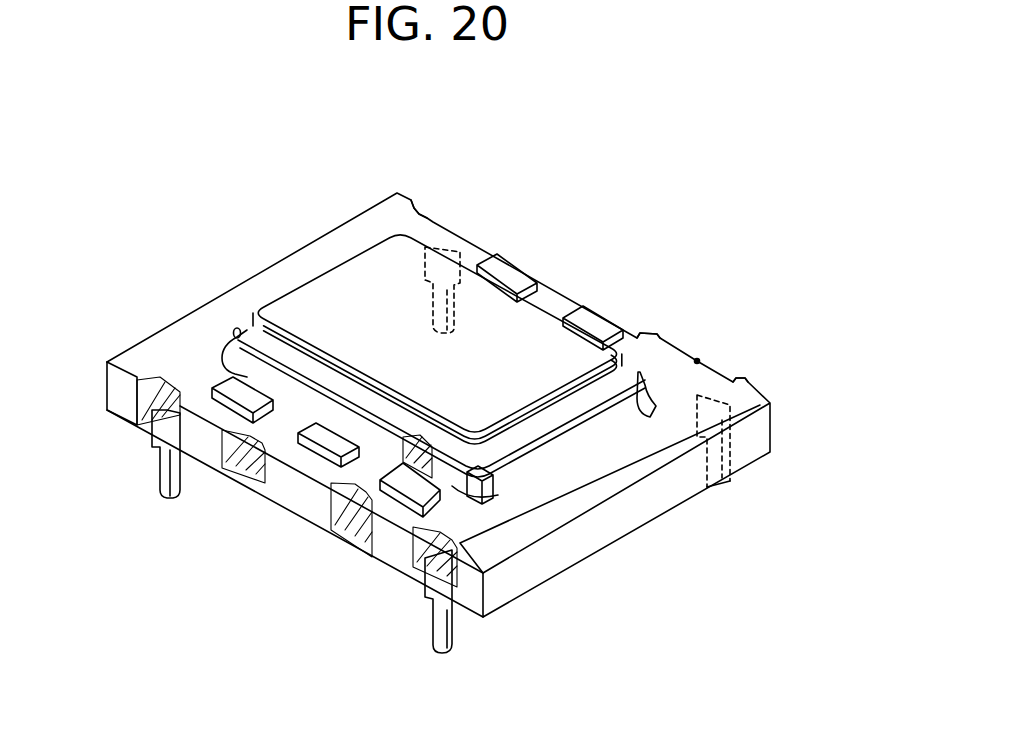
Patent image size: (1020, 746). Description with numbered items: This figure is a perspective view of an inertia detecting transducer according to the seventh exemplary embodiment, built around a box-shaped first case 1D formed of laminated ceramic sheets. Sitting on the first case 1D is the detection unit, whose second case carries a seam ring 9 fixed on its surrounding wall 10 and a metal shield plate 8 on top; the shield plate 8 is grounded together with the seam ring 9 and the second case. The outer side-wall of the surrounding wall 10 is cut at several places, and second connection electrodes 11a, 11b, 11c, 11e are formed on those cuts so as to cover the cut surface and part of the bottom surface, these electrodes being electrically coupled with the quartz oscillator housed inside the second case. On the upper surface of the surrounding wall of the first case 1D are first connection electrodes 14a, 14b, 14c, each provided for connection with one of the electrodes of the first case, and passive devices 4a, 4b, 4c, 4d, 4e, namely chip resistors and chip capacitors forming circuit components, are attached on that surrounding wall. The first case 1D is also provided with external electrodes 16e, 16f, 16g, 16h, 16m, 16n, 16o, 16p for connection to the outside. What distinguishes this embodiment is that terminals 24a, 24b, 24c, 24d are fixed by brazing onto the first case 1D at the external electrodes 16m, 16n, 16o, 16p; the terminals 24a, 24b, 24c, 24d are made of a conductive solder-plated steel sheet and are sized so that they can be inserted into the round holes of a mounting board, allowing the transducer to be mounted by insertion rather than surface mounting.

The surrounding wall 10 is at (742, 492).
The first case 1D is at (652, 502).
The metal shield plate 8 is at (593, 317).
The seam ring 9 is at (647, 375).
The second connection electrode 11a is at (512, 490).
The second connection electrode 11b is at (699, 362).
The second connection electrode 11c is at (237, 328).
The second connection electrode 11e is at (350, 516).
The first connection electrode 14a is at (483, 495).
The first connection electrode 14b is at (657, 407).
The first connection electrode 14c is at (227, 347).
The external electrode 16e is at (361, 535).
The external electrode 16f is at (250, 478).
The external electrode 16g is at (633, 332).
The external electrode 16h is at (523, 317).
The external electrode 16m is at (497, 553).
The external electrode 16n is at (718, 378).
The external electrode 16o is at (162, 380).
The external electrode 16p is at (433, 222).
The passive device 4a is at (417, 490).
The passive device 4b is at (328, 440).
The passive device 4c is at (240, 392).
The passive device 4d is at (615, 312).
The passive device 4e is at (503, 268).
The terminal 24a is at (443, 633).
The terminal 24b is at (733, 486).
The terminal 24c is at (162, 470).
The terminal 24d is at (457, 250).